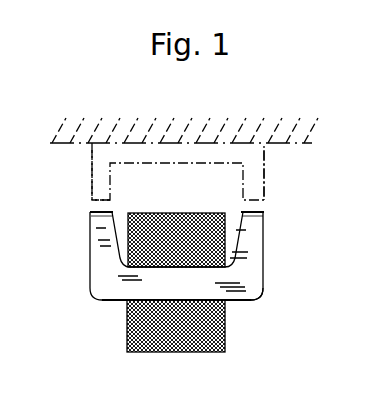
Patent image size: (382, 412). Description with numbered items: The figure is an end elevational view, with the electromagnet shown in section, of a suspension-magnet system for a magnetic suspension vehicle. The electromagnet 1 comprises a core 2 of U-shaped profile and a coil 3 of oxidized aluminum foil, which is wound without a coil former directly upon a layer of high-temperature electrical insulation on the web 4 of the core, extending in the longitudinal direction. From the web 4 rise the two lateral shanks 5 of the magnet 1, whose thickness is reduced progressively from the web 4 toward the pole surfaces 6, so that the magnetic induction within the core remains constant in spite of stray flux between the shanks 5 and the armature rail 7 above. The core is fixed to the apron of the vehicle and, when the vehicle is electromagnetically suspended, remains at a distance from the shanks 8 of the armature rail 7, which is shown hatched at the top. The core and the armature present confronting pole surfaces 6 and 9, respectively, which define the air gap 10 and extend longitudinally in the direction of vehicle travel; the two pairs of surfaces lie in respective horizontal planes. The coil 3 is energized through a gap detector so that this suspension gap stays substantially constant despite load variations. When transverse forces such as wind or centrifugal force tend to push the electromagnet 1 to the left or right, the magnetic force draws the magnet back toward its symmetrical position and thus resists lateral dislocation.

The electromagnet 1 is at (265, 300).
The core 2 is at (243, 296).
The coil 3 is at (176, 344).
The web 4 is at (103, 289).
The lateral shanks 5 is at (97, 261).
The pole surfaces 6 is at (98, 206).
The armature rail 7 is at (264, 170).
The shanks of the armature rail 8 is at (92, 175).
The pole surfaces of the armature 9 is at (246, 208).
The air gap 10 is at (111, 204).